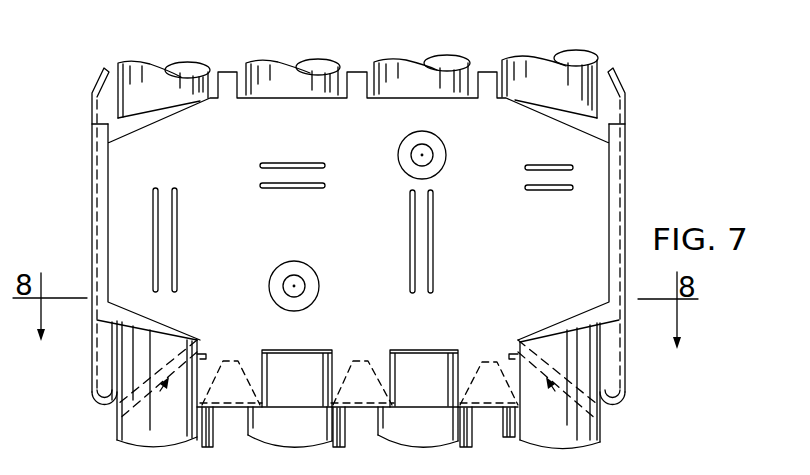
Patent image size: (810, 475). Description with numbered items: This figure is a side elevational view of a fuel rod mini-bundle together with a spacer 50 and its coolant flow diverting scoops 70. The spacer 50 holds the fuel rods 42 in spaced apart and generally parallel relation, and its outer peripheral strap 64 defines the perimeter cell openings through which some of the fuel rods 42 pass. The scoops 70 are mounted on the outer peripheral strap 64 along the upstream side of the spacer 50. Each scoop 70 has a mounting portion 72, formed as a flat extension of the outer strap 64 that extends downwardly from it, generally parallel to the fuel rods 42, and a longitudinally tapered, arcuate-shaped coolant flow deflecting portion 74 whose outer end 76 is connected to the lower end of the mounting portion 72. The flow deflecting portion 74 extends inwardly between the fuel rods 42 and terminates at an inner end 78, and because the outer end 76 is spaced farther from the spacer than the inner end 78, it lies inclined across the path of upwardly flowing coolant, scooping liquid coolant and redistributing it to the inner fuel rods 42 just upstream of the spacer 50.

The fuel rods 42 is at (153, 67).
The spacer 50 is at (634, 134).
The outer peripheral strap 64 is at (520, 130).
The coolant flow diverting scoops 70 is at (86, 393).
The mounting portion 72 is at (93, 353).
The coolant flow deflecting portion 74 is at (118, 421).
The outer end 76 is at (100, 409).
The inner ends 78 is at (228, 357).